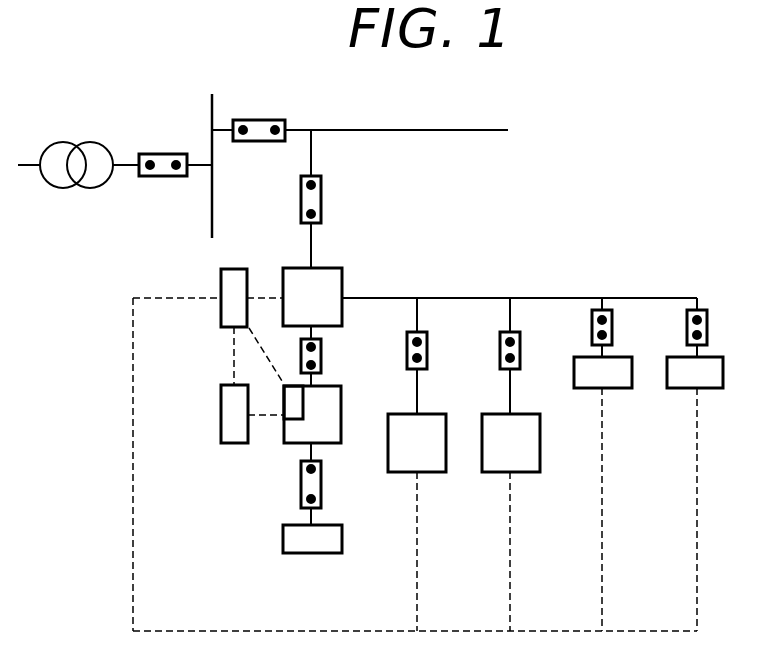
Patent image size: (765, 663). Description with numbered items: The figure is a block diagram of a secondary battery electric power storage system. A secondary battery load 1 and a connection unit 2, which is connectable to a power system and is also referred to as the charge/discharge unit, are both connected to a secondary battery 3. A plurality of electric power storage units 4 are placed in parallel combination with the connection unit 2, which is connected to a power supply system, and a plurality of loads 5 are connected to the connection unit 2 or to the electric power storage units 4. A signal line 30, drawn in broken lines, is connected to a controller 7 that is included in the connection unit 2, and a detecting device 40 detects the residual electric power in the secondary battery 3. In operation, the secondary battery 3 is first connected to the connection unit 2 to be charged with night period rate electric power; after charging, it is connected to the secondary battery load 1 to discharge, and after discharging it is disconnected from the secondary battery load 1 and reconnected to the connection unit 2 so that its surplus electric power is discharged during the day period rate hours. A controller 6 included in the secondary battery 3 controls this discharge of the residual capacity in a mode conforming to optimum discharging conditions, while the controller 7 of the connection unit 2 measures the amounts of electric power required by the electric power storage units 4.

The secondary battery load 1 is at (322, 553).
The connection unit 2 is at (288, 270).
The secondary battery 3 is at (293, 432).
The detecting device 40 is at (296, 403).
The electric power storage units 4 is at (437, 472).
The loads 5 is at (680, 377).
The controller 6 is at (228, 423).
The controller 7 is at (222, 313).
The signal line 30 is at (132, 382).